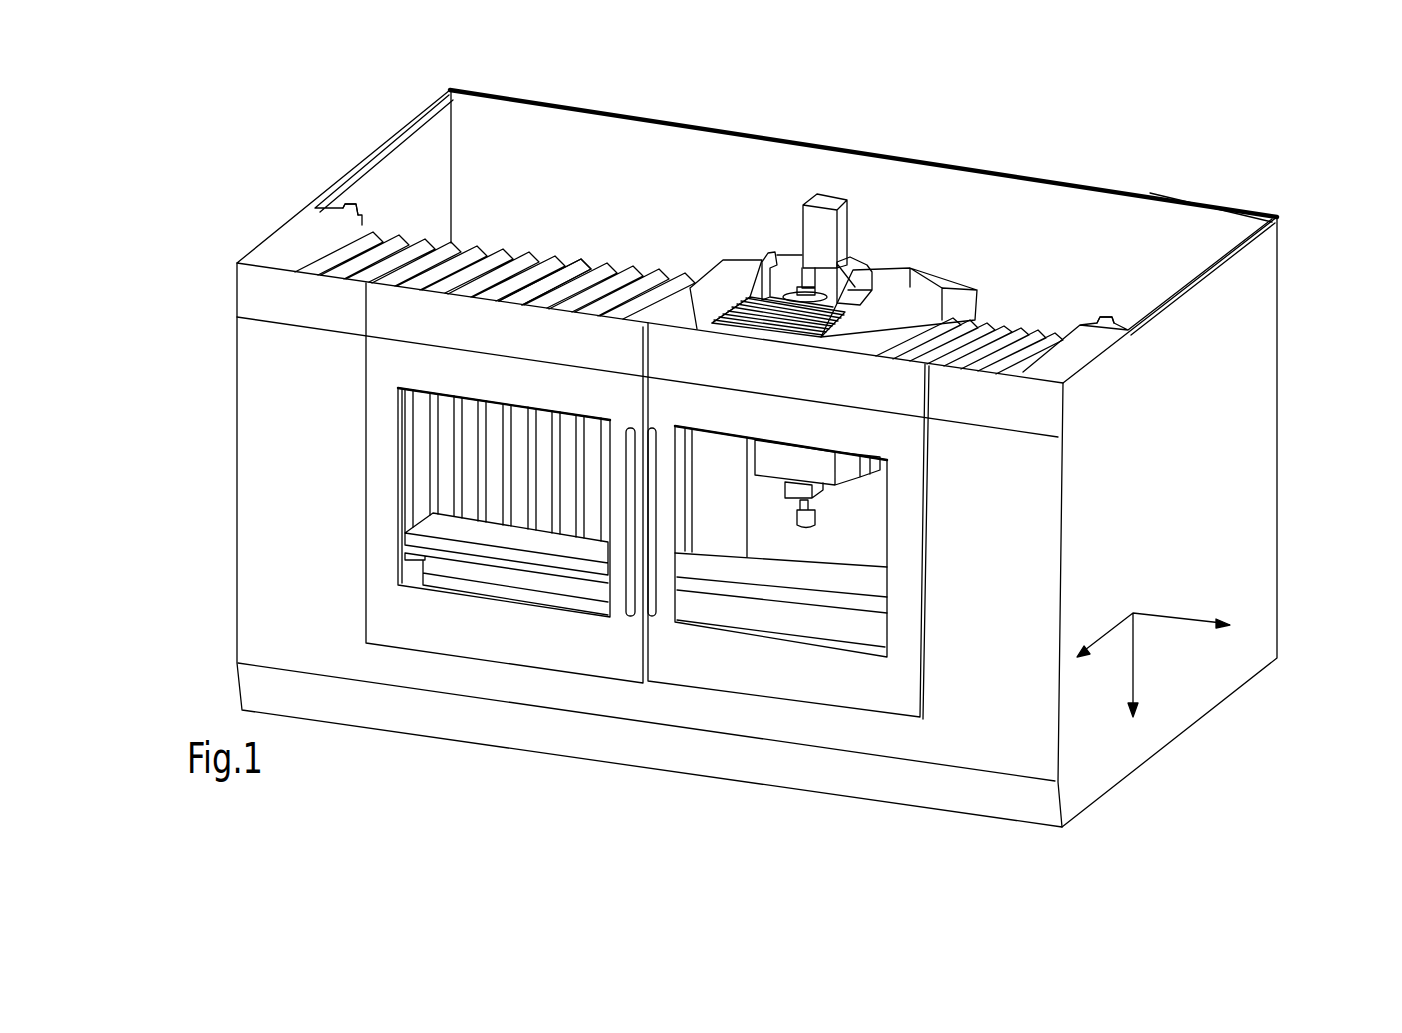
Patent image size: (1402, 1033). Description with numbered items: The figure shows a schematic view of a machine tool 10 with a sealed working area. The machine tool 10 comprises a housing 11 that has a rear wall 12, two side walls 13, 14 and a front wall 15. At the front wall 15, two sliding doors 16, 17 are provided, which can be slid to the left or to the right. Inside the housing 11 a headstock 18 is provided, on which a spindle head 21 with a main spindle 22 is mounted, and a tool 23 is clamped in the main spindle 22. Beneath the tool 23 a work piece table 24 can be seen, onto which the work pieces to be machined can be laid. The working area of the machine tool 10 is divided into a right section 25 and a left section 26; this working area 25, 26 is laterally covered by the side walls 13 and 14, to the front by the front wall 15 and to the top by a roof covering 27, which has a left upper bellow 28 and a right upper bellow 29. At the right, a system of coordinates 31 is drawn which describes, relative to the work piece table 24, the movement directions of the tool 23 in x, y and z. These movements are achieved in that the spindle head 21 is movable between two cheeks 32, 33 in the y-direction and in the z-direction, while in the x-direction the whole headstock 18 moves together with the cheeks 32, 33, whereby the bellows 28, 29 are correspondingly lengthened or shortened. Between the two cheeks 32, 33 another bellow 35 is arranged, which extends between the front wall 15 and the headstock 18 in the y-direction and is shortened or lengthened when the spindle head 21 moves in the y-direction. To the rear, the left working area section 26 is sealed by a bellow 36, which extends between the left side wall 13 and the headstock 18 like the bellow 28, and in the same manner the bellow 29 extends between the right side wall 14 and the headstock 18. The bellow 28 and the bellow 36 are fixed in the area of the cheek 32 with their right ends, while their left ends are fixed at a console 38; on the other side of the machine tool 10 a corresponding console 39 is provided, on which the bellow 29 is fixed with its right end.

The machine tool 10 is at (1085, 110).
The housing 11 is at (1277, 215).
The rear wall 12 is at (687, 177).
The side wall 13 is at (425, 160).
The side wall 14 is at (1228, 355).
The front wall 15 is at (300, 531).
The sliding door 16 is at (560, 637).
The sliding door 17 is at (823, 672).
The headstock 18 is at (872, 253).
The spindle head 21 is at (817, 473).
The main spindle 22 is at (815, 507).
The tool 23 is at (817, 527).
The work piece table 24 is at (523, 548).
The right section 25 is at (757, 549).
The left section 26 is at (440, 542).
The roof covering 27 is at (517, 255).
The left upper bellow 28 is at (565, 265).
The right upper bellow 29 is at (1005, 322).
The system of coordinates 31 is at (1163, 605).
The cheek 32 is at (725, 278).
The cheek 33 is at (900, 310).
The bellow 35 is at (773, 318).
The bellow 36 is at (450, 468).
The console 38 is at (356, 200).
The console 39 is at (1108, 318).